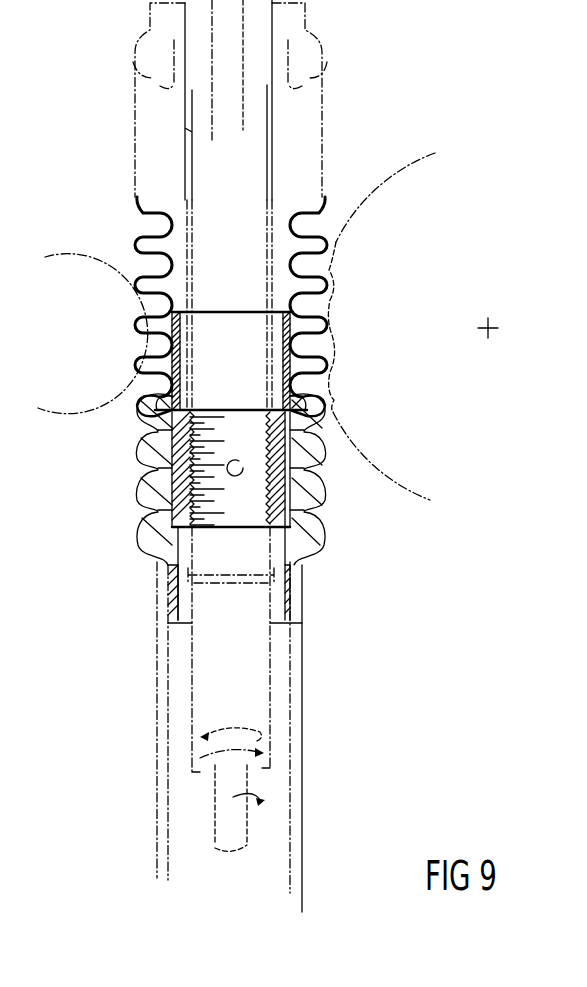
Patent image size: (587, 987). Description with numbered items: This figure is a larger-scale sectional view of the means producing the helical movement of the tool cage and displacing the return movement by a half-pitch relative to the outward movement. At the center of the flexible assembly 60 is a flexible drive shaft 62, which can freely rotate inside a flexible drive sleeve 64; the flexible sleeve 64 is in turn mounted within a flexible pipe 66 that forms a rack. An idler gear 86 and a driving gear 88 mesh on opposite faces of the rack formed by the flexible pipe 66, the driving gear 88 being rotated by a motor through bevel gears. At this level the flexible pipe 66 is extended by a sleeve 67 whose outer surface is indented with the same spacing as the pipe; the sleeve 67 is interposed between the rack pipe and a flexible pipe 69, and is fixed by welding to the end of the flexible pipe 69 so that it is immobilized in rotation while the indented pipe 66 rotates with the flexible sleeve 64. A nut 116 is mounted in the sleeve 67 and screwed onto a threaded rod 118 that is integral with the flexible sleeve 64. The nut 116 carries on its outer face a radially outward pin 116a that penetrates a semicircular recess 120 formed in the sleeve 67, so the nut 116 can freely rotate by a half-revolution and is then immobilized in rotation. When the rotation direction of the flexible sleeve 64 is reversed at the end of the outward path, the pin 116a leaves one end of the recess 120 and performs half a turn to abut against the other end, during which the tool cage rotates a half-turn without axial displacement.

The flexible assembly 60 is at (156, 722).
The flexible drive shaft 62 is at (238, 18).
The flexible drive sleeve 64 is at (270, 764).
The flexible pipe forming a rack 66 is at (137, 243).
The sleeve 67 is at (325, 505).
The flexible pipe 69 is at (300, 668).
The idler gear 86 is at (90, 312).
The driving gear 88 is at (389, 181).
The nut 116 is at (162, 503).
The pin 116a is at (176, 466).
The threaded rod 118 is at (190, 173).
The semicircular recess 120 is at (147, 461).